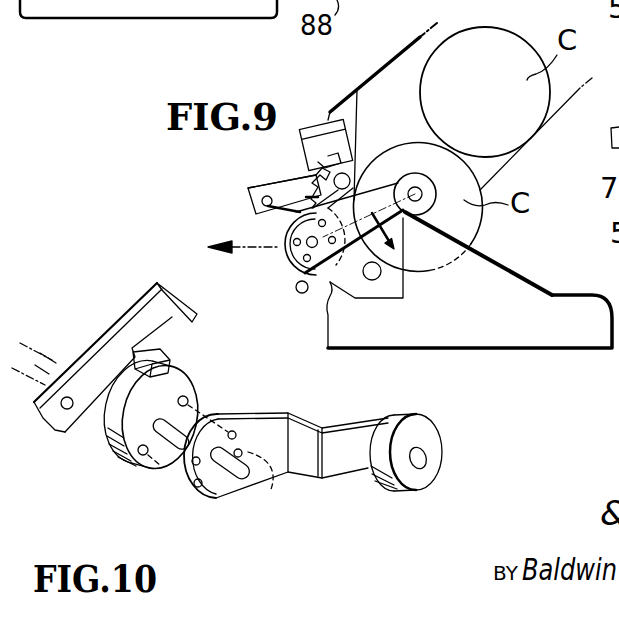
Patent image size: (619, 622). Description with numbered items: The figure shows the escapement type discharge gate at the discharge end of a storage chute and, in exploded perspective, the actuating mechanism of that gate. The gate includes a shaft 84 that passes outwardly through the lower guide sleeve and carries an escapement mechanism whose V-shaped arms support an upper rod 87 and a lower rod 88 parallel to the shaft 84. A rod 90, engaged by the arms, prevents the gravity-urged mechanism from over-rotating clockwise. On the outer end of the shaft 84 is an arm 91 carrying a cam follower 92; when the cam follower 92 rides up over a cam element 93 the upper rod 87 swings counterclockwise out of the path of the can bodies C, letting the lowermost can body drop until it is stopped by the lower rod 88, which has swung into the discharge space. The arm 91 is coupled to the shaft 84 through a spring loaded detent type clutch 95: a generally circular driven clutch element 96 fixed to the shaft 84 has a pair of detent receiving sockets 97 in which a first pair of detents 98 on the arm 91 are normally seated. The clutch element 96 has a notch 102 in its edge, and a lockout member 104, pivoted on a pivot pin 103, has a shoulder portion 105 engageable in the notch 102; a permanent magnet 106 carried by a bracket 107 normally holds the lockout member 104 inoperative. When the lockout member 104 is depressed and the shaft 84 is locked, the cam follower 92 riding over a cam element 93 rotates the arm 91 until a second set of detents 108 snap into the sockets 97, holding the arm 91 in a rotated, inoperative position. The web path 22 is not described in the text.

In FIG. 9, the web path 22 is at (500, 168).
In FIG. 9, the upper rod 87 is at (356, 158).
In FIG. 9, the lower rod 88 is at (373, 280).
In FIG. 9, the rod 90 is at (302, 293).
In FIG. 9, the arm 91 is at (387, 187).
In FIG. 10, the arm 91 is at (313, 420).
In FIG. 9, the cam follower 92 is at (449, 157).
In FIG. 10, the cam follower 92 is at (412, 418).
In FIG. 9, the cam element 93 is at (521, 268).
In FIG. 9, the pivot pin 103 is at (250, 201).
In FIG. 9, the lockout member 104 is at (270, 188).
In FIG. 10, the lockout member 104 is at (137, 300).
In FIG. 9, the permanent magnet 106 is at (360, 135).
In FIG. 9, the bracket 107 is at (311, 128).
In FIG. 10, the shaft 84 is at (58, 360).
In FIG. 10, the shoulder portion 105 is at (192, 312).
In FIG. 10, the notch 102 is at (147, 365).
In FIG. 10, the driven clutch element 96 is at (185, 375).
In FIG. 10, the detent receiving sockets 97 is at (190, 402).
In FIG. 10, the first pair of detents 98 is at (238, 430).
In FIG. 10, the second set of detents 108 is at (267, 482).
In FIG. 10, the spring loaded detent type clutch 95 is at (158, 493).